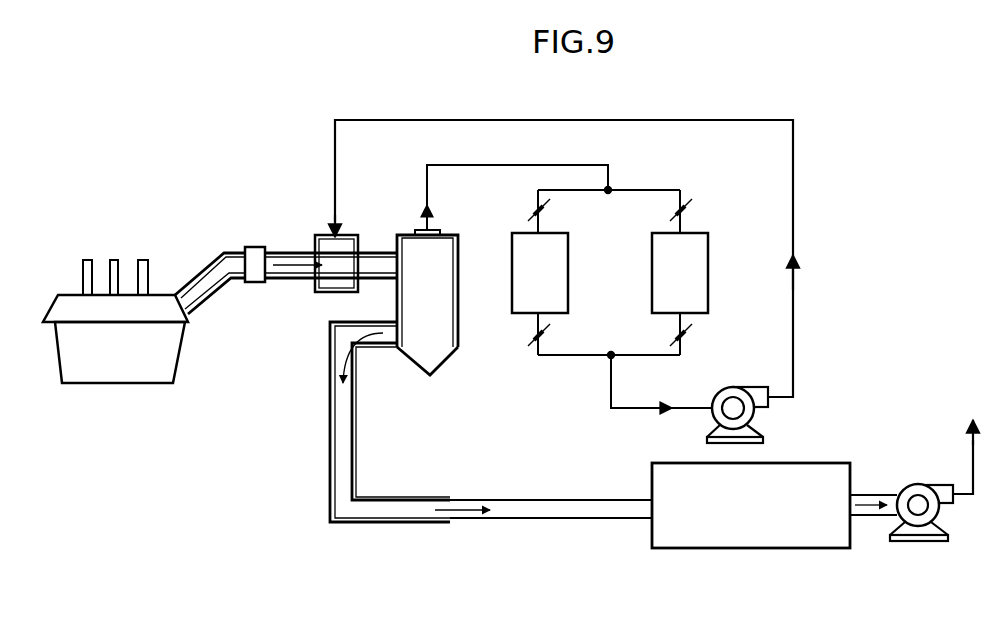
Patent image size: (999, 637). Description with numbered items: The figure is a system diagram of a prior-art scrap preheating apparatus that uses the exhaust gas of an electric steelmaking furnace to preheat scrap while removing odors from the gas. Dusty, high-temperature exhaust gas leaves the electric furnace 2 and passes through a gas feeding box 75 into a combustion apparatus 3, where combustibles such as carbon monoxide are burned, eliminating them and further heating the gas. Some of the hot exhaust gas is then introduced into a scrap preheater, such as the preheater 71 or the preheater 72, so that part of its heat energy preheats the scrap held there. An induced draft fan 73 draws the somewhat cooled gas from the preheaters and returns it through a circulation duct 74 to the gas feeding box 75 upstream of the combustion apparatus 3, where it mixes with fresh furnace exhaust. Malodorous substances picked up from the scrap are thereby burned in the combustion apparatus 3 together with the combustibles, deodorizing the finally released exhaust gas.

The electric furnace 2 is at (107, 368).
The combustion apparatus 3 is at (416, 299).
The scrap preheater 71 is at (523, 299).
The scrap preheater 72 is at (663, 299).
The induced draft fan 73 is at (713, 418).
The circulation duct 74 is at (453, 120).
The gas feeding box 75 is at (318, 295).